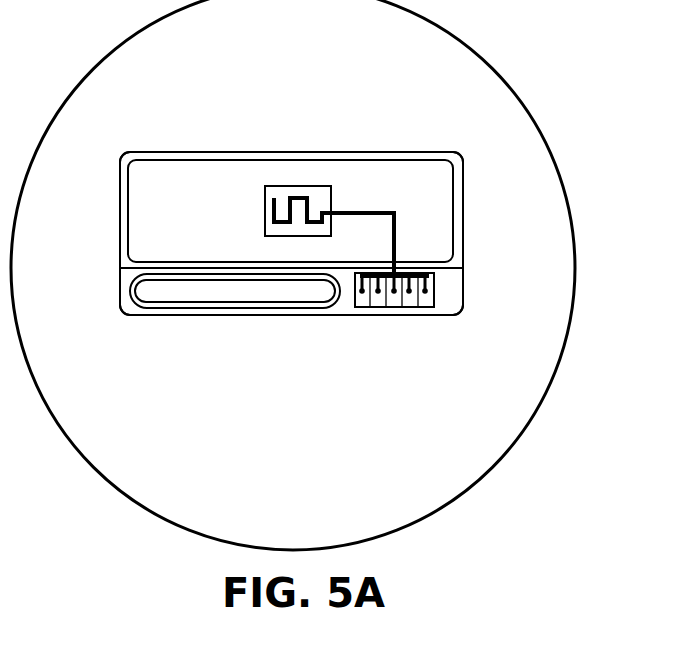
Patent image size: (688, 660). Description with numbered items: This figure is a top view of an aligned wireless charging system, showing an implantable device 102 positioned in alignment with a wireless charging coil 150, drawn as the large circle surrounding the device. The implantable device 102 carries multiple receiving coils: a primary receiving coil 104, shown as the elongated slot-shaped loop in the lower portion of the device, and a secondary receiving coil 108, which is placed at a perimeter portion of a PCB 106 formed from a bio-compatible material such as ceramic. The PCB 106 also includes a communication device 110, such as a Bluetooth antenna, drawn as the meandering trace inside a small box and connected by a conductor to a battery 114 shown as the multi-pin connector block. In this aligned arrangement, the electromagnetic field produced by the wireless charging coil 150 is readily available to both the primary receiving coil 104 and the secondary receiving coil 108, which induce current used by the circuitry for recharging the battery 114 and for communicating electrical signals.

The implantable device 102 is at (251, 340).
The primary receiving coil 104 is at (300, 308).
The PCB 106 is at (363, 175).
The secondary receiving coil 108 is at (417, 160).
The communication device 110 is at (278, 193).
The battery 114 is at (424, 308).
The wireless charging coil 150 is at (537, 118).